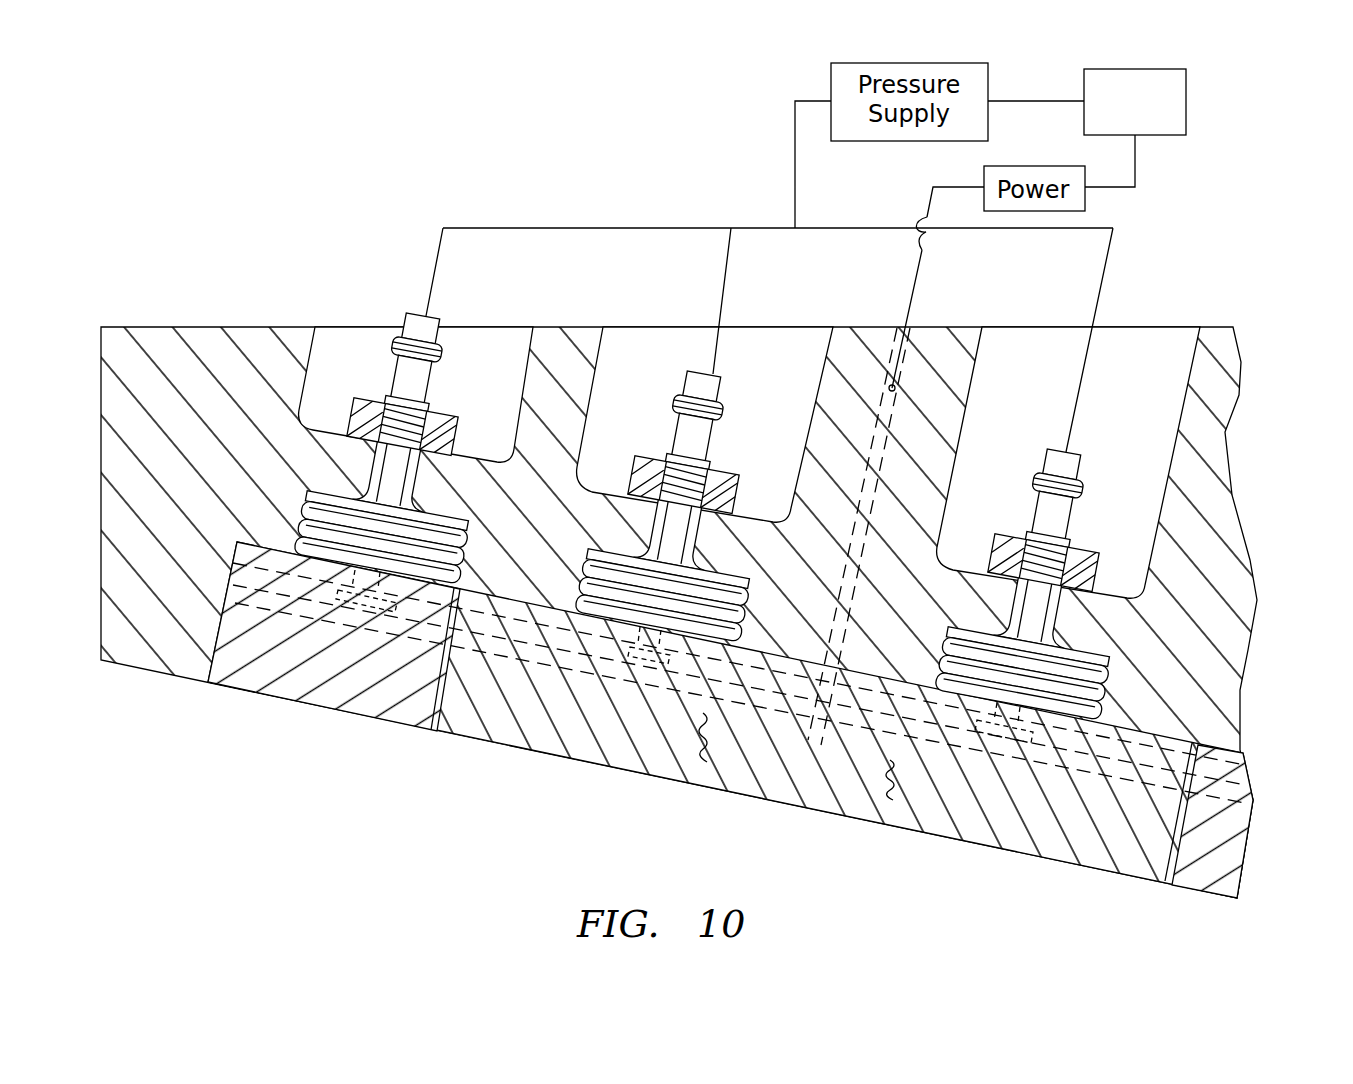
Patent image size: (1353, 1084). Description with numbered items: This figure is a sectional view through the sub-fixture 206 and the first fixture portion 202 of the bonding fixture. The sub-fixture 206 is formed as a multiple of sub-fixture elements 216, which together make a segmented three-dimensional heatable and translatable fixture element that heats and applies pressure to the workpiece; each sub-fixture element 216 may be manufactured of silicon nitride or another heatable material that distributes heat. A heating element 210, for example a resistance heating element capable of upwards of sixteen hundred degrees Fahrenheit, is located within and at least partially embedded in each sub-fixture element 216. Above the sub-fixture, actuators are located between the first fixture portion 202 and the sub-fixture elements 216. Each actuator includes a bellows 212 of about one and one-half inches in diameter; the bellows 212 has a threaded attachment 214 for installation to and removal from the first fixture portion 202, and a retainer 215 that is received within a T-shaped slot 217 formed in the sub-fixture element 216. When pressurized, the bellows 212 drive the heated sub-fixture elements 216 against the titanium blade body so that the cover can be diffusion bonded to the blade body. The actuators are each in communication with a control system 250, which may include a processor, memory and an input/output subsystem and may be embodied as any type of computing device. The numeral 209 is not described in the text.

The first fixture portion 202 is at (1213, 393).
The sub-fixture 206 is at (390, 697).
The valve 209 is at (756, 510).
The heating element 210 is at (767, 757).
The bellows 212 is at (1087, 687).
The threaded attachment 214 is at (1073, 547).
The retainer 215 is at (360, 618).
The sub-fixture element 216 is at (990, 800).
The T-shaped slot 217 is at (527, 637).
The control system 250 is at (1160, 116).